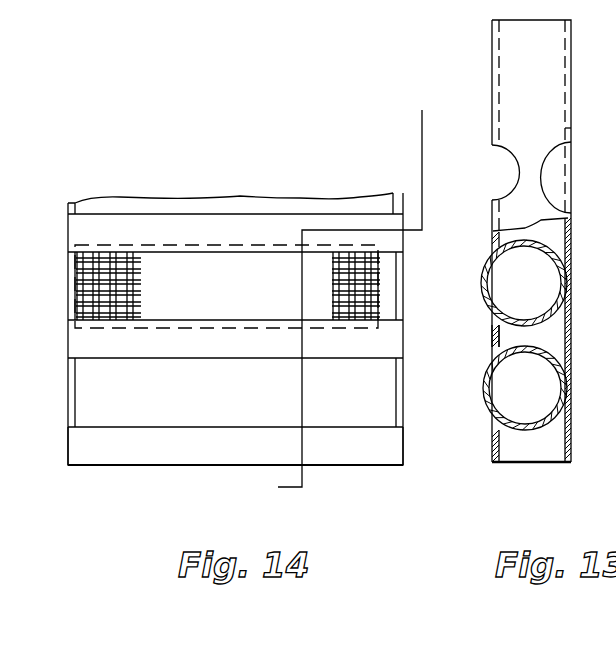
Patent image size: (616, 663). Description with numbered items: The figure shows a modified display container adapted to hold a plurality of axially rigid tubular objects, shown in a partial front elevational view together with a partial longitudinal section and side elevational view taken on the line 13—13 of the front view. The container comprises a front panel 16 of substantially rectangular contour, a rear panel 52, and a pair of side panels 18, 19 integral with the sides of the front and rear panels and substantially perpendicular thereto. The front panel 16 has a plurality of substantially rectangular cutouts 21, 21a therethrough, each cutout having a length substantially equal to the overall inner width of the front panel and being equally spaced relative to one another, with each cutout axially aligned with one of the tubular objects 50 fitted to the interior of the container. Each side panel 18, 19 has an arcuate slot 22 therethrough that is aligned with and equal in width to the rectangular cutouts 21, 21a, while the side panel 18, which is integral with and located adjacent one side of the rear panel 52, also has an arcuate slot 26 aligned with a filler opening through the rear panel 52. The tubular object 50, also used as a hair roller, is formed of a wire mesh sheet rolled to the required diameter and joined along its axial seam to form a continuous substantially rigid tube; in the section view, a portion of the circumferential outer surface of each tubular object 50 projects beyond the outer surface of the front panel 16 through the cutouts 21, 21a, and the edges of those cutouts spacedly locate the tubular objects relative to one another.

In FIG. 14, the section line 13— 13 is at (365, 302).
In FIG. 14, the front panel 16 is at (140, 452).
In FIG. 13, the front panel 16 is at (493, 336).
In FIG. 14, the side panel 18 is at (403, 448).
In FIG. 13, the side panel 18 is at (553, 92).
In FIG. 14, the side panel 19 is at (68, 449).
In FIG. 14, the rectangular cutout 21 is at (205, 422).
In FIG. 14, the rectangular cutout 21a is at (200, 312).
In FIG. 13, the arcuate slot 22 is at (498, 176).
In FIG. 13, the arcuate slot 26 is at (555, 193).
In FIG. 14, the tubular object 50 is at (90, 305).
In FIG. 13, the tubular object 50 is at (556, 316).
In FIG. 13, the rear panel 52 is at (592, 128).